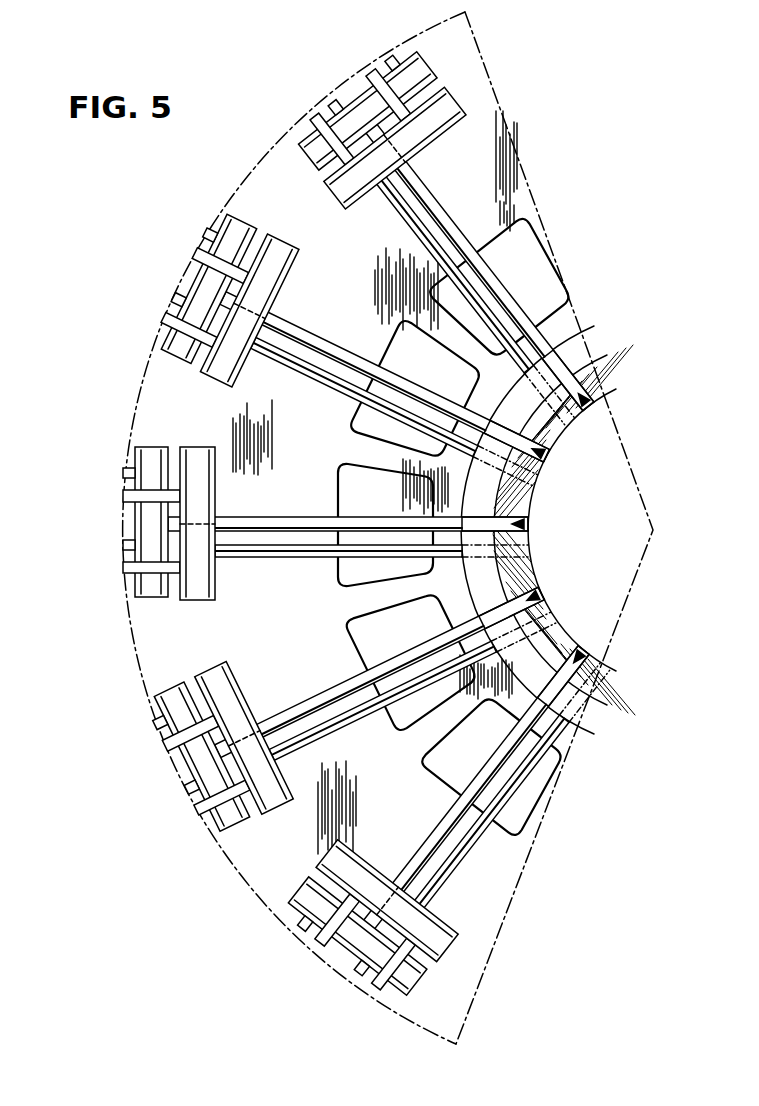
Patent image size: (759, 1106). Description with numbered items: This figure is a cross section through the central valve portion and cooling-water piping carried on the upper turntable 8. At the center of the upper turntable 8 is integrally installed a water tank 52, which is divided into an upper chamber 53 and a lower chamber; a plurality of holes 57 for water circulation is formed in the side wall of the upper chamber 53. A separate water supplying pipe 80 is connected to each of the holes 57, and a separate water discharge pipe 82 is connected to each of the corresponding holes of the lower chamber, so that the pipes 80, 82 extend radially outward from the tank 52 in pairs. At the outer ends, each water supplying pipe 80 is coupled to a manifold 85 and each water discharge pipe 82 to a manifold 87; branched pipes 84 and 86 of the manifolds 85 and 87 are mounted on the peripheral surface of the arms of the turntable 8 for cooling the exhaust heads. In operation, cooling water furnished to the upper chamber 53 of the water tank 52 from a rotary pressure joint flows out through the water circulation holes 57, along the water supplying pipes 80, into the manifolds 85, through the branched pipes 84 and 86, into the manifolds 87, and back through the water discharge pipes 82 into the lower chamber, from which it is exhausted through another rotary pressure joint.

The upper turntable 8 is at (256, 170).
The water tank 52 is at (588, 392).
The upper chamber 53 is at (628, 492).
The holes for water circulation 57 is at (578, 418).
The water supplying pipe 80 is at (456, 234).
The water discharge pipe 82 is at (436, 248).
The branched pipe 84 is at (372, 76).
The manifold 85 is at (430, 146).
The branched pipe 86 is at (392, 58).
The manifold 87 is at (428, 72).